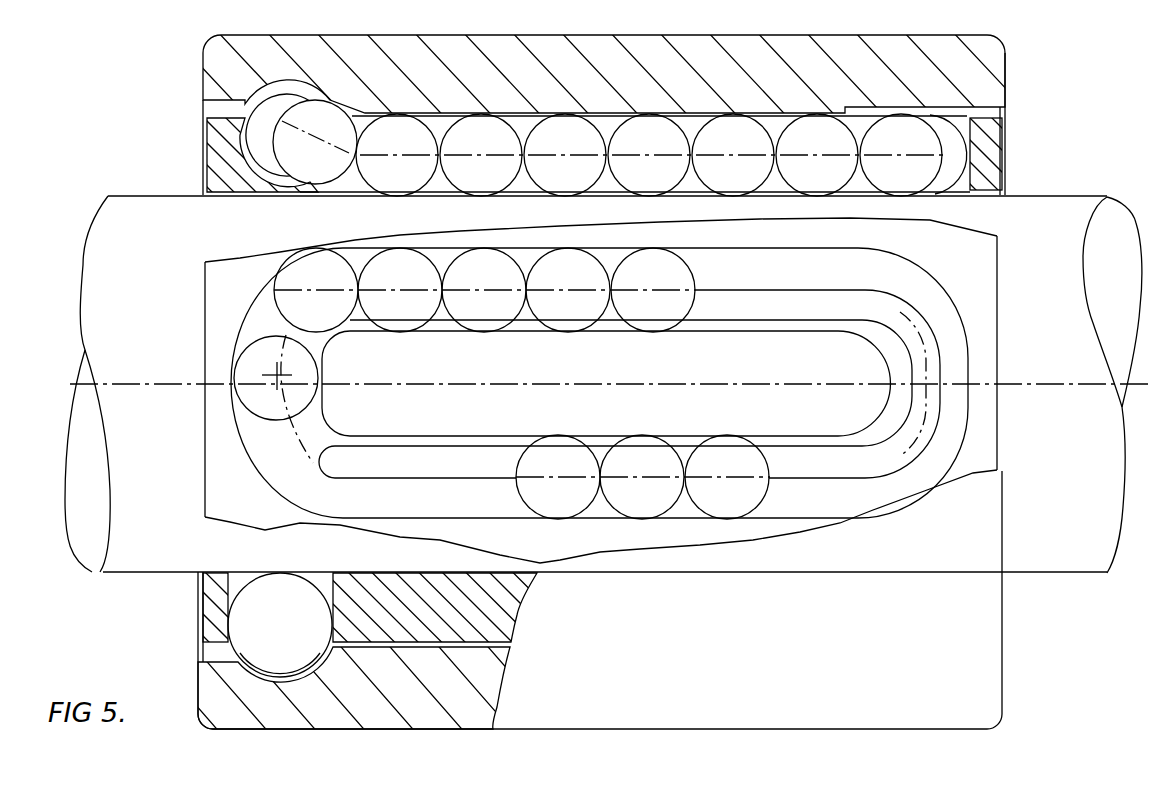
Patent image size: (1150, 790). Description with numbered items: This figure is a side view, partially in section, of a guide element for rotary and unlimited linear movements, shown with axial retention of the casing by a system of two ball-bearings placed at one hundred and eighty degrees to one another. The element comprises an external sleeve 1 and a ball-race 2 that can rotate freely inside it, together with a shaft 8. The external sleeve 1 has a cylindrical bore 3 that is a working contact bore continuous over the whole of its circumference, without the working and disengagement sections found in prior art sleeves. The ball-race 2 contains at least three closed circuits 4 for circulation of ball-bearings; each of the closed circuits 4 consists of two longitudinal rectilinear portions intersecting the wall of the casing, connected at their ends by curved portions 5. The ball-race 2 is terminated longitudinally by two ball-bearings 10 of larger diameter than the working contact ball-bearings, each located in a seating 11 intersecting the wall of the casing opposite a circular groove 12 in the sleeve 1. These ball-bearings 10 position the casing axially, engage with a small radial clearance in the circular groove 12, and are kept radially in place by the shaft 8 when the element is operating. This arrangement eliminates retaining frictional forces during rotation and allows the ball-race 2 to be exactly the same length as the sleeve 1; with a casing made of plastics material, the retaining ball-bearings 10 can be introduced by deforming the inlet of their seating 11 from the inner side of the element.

The external sleeve 1 is at (237, 67).
The ball-race 2 is at (225, 160).
The cylindrical bore 3 is at (413, 650).
The closed circuits 4 is at (780, 297).
The curved portions 5 is at (947, 352).
The shaft 8 is at (1090, 528).
The ball-bearings 10 is at (258, 620).
The seating 11 is at (242, 580).
The circular groove 12 is at (293, 678).